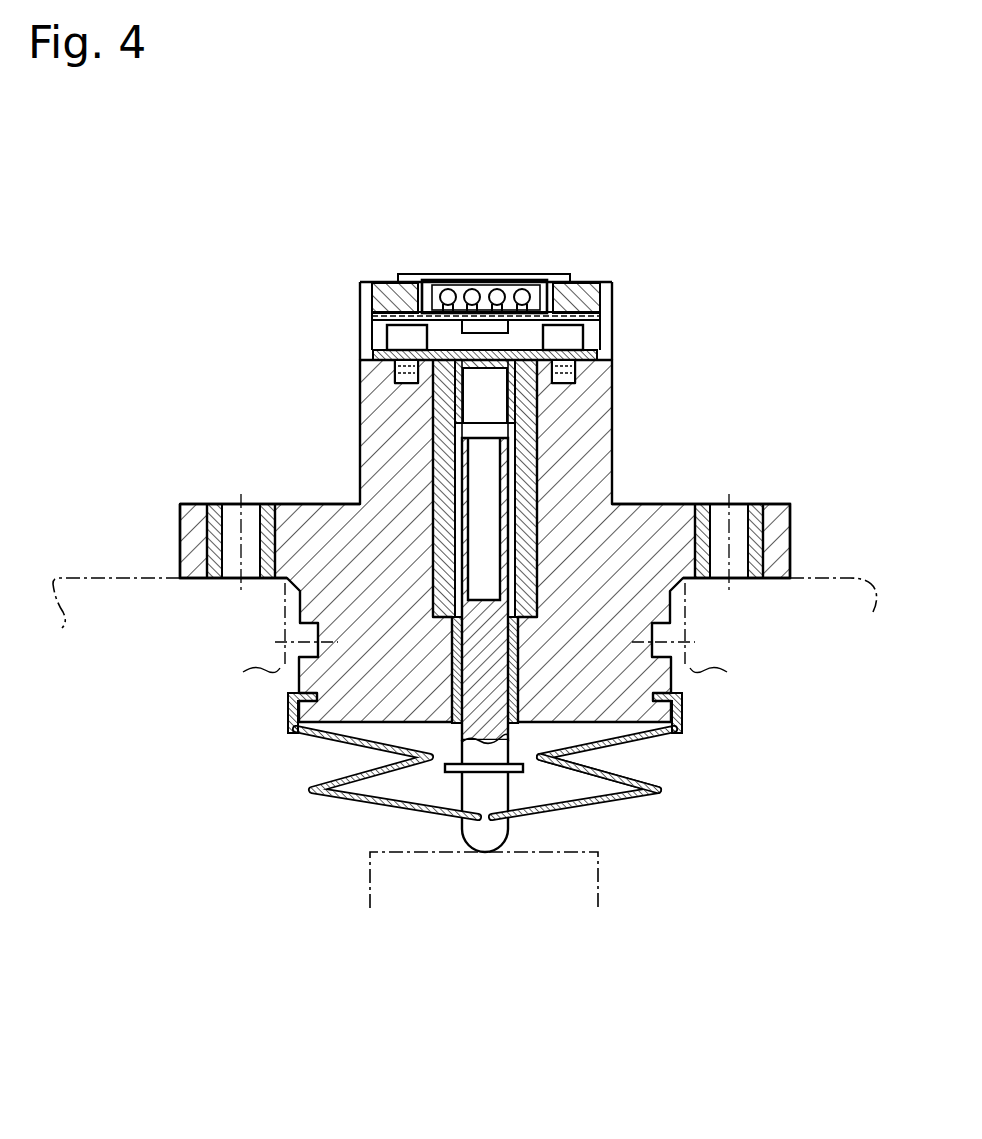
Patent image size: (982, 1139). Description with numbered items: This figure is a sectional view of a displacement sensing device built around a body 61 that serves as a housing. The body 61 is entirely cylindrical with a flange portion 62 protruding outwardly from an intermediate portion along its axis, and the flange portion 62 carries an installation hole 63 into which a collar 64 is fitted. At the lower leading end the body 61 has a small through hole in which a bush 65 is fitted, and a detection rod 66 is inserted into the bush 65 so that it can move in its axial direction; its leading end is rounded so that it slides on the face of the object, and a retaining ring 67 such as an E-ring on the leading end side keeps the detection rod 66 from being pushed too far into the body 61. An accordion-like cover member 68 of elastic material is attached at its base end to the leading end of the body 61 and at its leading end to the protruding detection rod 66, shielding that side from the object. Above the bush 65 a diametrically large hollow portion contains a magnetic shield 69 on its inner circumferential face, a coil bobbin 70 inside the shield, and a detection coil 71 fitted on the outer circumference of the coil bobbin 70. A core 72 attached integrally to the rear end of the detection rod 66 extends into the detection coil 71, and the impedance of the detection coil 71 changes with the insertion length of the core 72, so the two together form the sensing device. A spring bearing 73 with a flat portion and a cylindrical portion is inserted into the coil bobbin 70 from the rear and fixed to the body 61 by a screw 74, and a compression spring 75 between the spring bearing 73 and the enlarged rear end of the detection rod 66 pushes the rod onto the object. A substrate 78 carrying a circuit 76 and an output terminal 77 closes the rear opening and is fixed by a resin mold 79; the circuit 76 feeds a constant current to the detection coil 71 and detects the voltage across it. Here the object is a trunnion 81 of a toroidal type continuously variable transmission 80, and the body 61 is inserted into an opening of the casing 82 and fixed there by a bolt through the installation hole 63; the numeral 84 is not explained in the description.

The body 61 is at (358, 387).
The flange portion 62 is at (178, 514).
The installation hole 63 is at (258, 512).
The collar 64 is at (215, 503).
The bush 65 is at (533, 723).
The detection rod 66 is at (462, 790).
The retaining ring 67 is at (517, 773).
The cover member 68 is at (653, 790).
The magnetic shield 69 is at (532, 550).
The coil bobbin 70 is at (428, 565).
The detection coil 71 is at (532, 410).
The core 72 is at (477, 468).
The spring bearing 73 is at (512, 351).
The screw 74 is at (567, 336).
The compression spring 75 is at (520, 432).
The circuit 76 is at (432, 313).
The output terminal 77 is at (503, 295).
The substrate 78 is at (372, 317).
The resin mold 79 is at (387, 282).
The toroidal type continuously variable transmission 80 is at (822, 556).
The trunnion 81 is at (570, 886).
The casing 82 is at (840, 588).
The bolt 84 is at (397, 337).